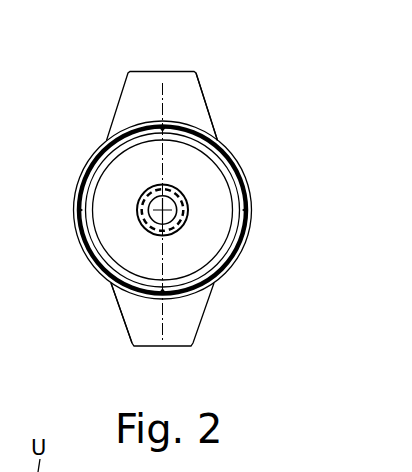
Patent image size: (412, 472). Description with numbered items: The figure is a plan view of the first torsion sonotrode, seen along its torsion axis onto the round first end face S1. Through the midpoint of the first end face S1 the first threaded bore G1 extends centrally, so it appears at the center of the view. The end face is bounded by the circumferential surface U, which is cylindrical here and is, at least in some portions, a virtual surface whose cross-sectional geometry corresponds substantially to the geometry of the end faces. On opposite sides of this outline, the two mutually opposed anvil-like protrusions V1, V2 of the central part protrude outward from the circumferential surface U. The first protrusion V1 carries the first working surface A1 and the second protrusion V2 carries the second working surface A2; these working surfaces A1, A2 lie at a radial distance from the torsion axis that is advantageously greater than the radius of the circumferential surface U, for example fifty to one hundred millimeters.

The circumferential surface U is at (97, 143).
The first working surface A1 is at (160, 72).
The second working surface A2 is at (147, 347).
The first protrusion V1 is at (248, 88).
The second protrusion V2 is at (101, 298).
The first end face S1 is at (212, 178).
The first threaded bore G1 is at (188, 208).